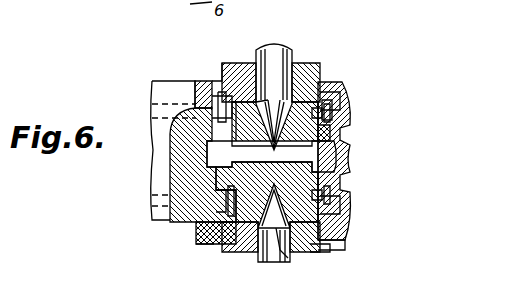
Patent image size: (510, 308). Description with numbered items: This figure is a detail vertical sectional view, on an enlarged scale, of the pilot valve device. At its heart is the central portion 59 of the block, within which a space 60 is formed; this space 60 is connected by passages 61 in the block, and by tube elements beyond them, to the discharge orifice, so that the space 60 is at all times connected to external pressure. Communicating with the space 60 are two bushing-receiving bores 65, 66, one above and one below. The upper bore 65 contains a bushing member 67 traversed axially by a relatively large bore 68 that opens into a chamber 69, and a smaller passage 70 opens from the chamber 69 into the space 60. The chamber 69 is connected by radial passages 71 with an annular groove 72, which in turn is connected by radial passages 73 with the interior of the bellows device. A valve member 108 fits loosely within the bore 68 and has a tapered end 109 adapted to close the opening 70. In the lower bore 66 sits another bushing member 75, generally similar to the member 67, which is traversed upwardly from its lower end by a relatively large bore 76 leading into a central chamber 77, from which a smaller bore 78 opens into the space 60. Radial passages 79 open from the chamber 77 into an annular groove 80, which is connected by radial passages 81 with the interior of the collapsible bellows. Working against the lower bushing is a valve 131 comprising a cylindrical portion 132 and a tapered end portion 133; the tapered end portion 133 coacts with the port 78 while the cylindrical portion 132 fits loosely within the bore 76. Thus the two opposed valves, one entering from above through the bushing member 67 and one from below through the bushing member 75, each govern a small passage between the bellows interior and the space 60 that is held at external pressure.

The central portion 59 is at (348, 118).
The space 60 is at (220, 156).
The passages 61 is at (338, 158).
The bushing-receiving bore 65 is at (326, 96).
The bushing-receiving bore 66 is at (328, 248).
The bushing member 67 is at (226, 66).
The bore 68 is at (300, 82).
The chamber 69 is at (342, 108).
The passage 70 is at (332, 128).
The radial passages 71 is at (244, 66).
The annular groove 72 is at (216, 96).
The radial passages 73 is at (222, 106).
The bushing member 75 is at (246, 248).
The bore 76 is at (302, 252).
The central chamber 77 is at (332, 196).
The bore 78 is at (318, 168).
The radial passages 79 is at (330, 216).
The annular groove 80 is at (218, 236).
The radial passages 81 is at (198, 226).
The valve member 108 is at (268, 48).
The tapered end 109 is at (286, 60).
The valve 131 is at (276, 258).
The cylindrical portion 132 is at (288, 258).
The tapered end portion 133 is at (322, 246).